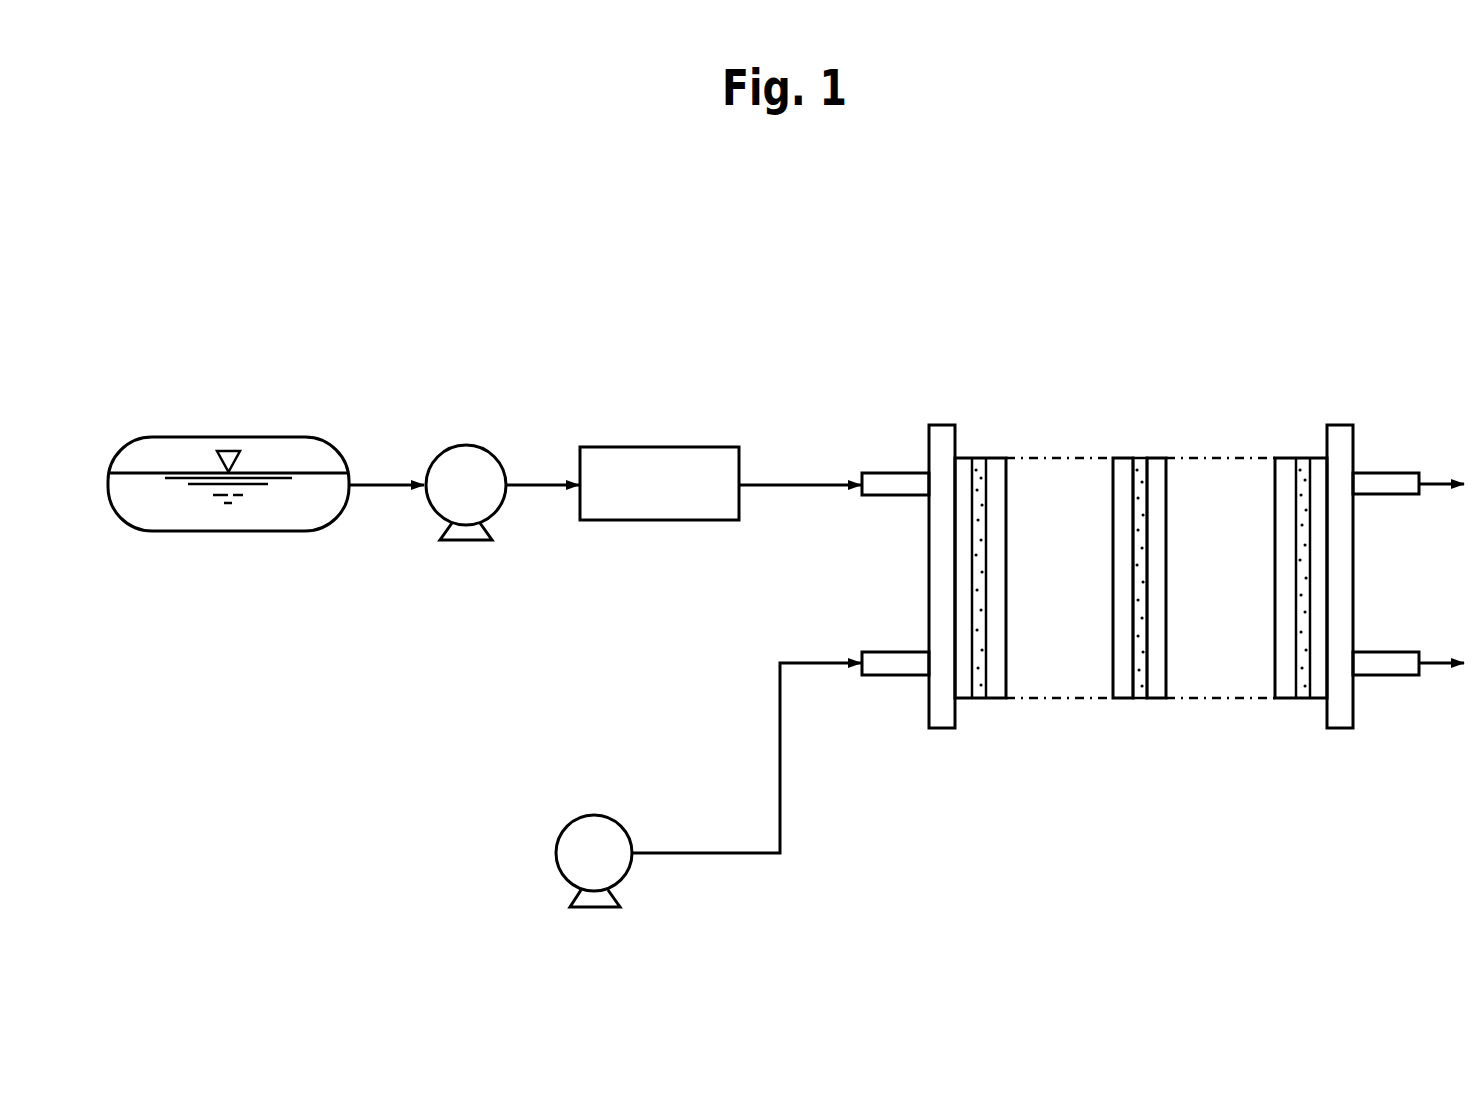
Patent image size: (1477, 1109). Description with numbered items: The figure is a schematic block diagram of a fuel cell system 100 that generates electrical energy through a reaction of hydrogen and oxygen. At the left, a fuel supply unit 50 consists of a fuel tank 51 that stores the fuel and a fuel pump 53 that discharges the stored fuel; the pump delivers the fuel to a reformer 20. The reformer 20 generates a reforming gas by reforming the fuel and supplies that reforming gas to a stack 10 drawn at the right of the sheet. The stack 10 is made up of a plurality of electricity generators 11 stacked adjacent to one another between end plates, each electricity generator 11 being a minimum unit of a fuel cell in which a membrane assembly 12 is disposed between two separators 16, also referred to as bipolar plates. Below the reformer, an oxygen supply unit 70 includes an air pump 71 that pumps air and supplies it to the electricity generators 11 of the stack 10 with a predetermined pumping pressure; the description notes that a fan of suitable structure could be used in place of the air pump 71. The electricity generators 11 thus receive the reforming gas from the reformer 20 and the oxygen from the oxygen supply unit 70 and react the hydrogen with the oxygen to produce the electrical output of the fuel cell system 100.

The fuel cell system 100 is at (1276, 212).
The stack 10 is at (1314, 392).
The electricity generator 11 is at (1200, 395).
The membrane assembly 12 is at (1140, 457).
The separator 16 is at (1122, 457).
The reformer 20 is at (695, 447).
The fuel supply unit 50 is at (404, 548).
The fuel tank 51 is at (184, 438).
The fuel pump 53 is at (476, 446).
The oxygen supply unit 70 is at (508, 900).
The air pump 71 is at (603, 814).